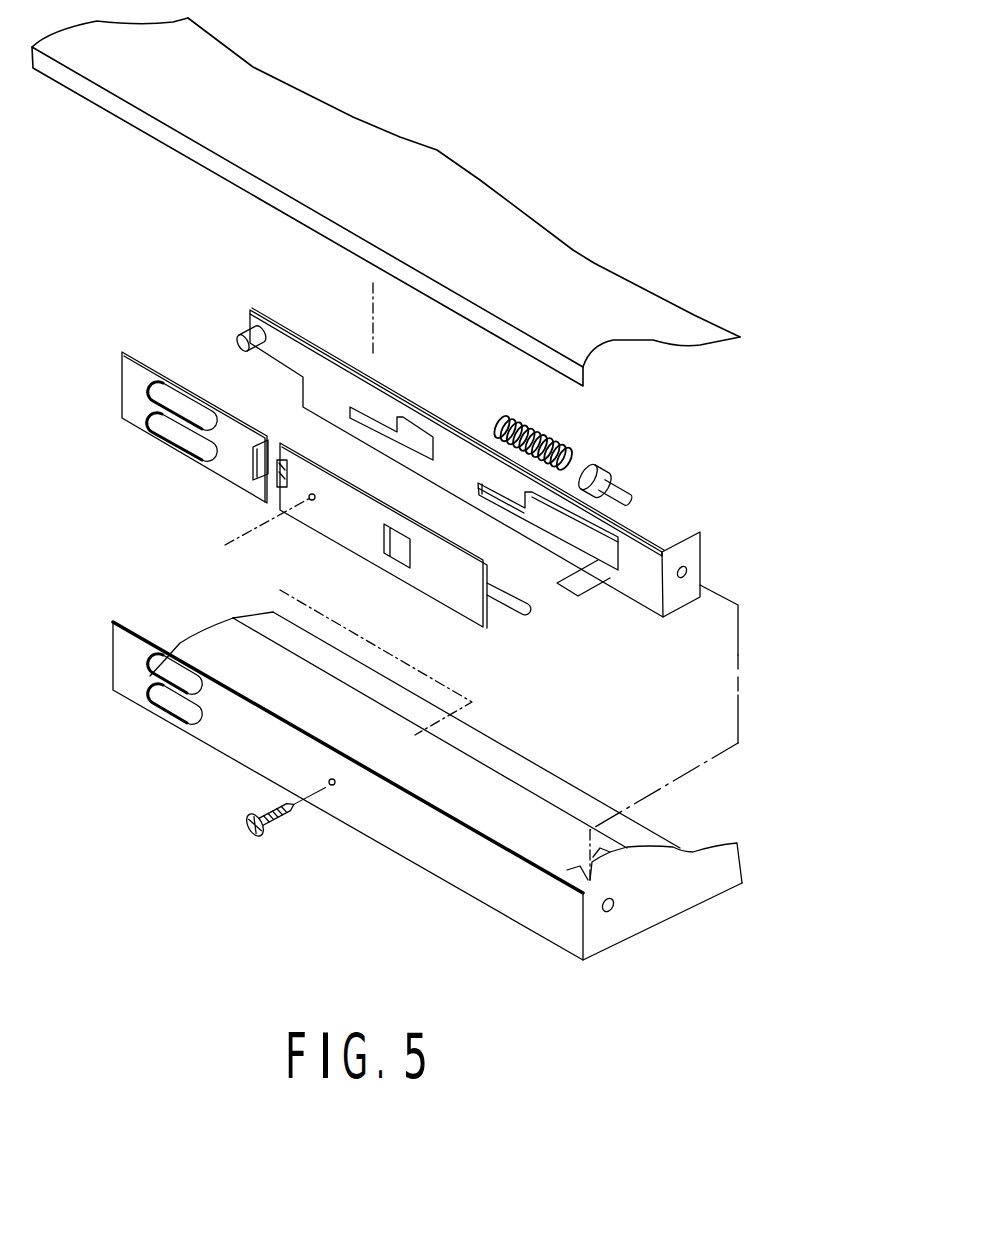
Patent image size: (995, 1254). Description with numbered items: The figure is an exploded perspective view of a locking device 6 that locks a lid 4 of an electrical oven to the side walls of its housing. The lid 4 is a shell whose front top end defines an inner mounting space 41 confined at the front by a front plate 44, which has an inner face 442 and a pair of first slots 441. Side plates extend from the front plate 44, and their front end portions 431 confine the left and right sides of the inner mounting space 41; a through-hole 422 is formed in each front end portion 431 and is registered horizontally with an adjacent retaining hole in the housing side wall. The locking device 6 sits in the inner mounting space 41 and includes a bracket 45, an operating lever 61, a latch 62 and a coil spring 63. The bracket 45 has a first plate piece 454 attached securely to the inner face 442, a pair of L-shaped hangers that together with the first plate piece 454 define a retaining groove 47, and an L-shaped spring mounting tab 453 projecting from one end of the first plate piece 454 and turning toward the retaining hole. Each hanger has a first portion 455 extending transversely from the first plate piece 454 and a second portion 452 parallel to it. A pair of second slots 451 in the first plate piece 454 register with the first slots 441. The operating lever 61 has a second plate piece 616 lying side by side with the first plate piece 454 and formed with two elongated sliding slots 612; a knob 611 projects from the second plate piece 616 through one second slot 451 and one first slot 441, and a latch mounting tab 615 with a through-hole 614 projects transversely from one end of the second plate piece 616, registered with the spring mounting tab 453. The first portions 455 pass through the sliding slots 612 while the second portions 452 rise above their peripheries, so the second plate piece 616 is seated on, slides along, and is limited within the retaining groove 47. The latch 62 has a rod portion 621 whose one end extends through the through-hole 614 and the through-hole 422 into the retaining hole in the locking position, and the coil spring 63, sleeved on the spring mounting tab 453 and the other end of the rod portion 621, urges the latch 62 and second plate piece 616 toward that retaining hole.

The lid 4 is at (411, 824).
The inner mounting space 41 is at (492, 815).
The front plate 44 is at (553, 918).
The first slots 441 is at (170, 672).
The inner face 442 is at (393, 833).
The front end portions 431 is at (700, 877).
The through-hole 422 is at (607, 915).
The bracket 45 is at (122, 392).
The second slots 451 is at (172, 400).
The first plate piece 454 is at (191, 385).
The retaining groove 47 is at (268, 460).
The second portion 452 is at (267, 463).
The first portion 455 is at (270, 482).
The spring mounting tab 453 is at (528, 592).
The locking device 6 is at (495, 457).
The operating lever 61 is at (333, 345).
The knob 611 is at (243, 330).
The sliding slots 612 is at (410, 437).
The through-hole 614 is at (681, 583).
The latch mounting tab 615 is at (693, 552).
The second plate piece 616 is at (300, 332).
The latch 62 is at (645, 461).
The rod portion 621 is at (625, 458).
The coil spring 63 is at (545, 435).